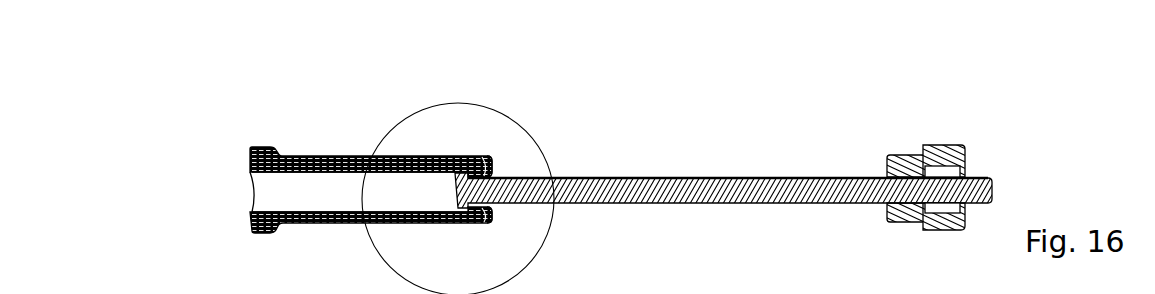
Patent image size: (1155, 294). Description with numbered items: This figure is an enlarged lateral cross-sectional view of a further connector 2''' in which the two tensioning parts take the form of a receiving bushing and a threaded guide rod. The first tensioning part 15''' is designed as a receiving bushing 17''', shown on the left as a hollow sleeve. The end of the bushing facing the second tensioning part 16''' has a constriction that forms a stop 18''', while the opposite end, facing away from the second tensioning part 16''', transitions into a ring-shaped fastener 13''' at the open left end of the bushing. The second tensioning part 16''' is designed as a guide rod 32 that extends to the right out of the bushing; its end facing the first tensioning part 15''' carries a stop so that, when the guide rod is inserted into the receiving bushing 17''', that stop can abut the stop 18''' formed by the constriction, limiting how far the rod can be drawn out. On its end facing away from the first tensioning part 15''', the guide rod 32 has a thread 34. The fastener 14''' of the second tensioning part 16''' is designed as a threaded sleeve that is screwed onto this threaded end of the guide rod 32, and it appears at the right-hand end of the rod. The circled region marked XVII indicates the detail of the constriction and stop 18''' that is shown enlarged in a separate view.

The connector 2''' is at (572, 152).
The ring-shaped fastener 13''' is at (347, 150).
The fastener 14''' is at (951, 165).
The first tensioning part 15''' is at (190, 200).
The second tensioning part 16''' is at (723, 129).
The receiving bushing 17''' is at (360, 149).
The stop 18''' is at (541, 147).
The guide rod 32 is at (682, 186).
The thread 34 is at (851, 176).
The detail circle for FIG. 17 XVII is at (395, 128).